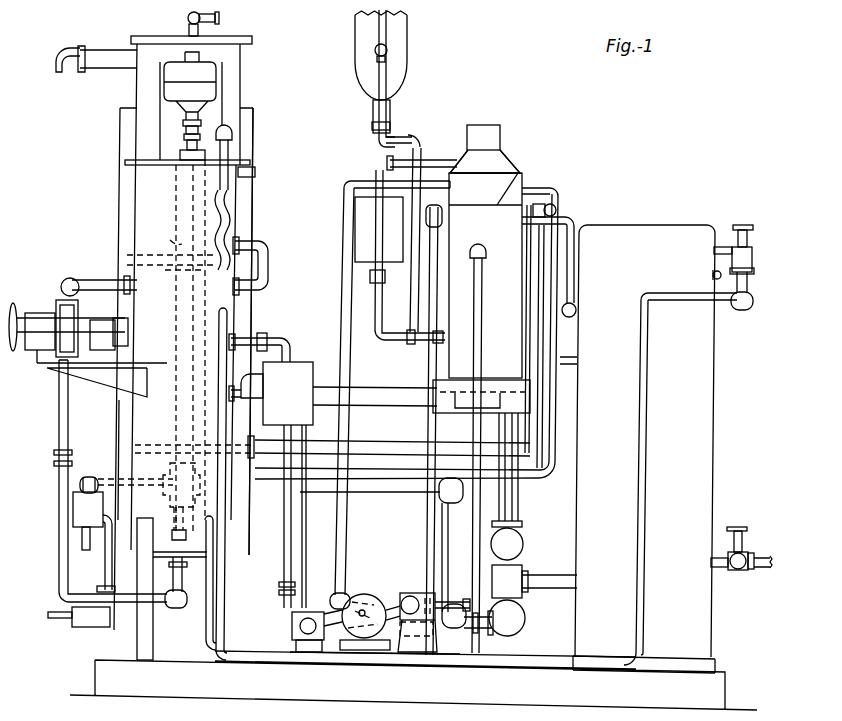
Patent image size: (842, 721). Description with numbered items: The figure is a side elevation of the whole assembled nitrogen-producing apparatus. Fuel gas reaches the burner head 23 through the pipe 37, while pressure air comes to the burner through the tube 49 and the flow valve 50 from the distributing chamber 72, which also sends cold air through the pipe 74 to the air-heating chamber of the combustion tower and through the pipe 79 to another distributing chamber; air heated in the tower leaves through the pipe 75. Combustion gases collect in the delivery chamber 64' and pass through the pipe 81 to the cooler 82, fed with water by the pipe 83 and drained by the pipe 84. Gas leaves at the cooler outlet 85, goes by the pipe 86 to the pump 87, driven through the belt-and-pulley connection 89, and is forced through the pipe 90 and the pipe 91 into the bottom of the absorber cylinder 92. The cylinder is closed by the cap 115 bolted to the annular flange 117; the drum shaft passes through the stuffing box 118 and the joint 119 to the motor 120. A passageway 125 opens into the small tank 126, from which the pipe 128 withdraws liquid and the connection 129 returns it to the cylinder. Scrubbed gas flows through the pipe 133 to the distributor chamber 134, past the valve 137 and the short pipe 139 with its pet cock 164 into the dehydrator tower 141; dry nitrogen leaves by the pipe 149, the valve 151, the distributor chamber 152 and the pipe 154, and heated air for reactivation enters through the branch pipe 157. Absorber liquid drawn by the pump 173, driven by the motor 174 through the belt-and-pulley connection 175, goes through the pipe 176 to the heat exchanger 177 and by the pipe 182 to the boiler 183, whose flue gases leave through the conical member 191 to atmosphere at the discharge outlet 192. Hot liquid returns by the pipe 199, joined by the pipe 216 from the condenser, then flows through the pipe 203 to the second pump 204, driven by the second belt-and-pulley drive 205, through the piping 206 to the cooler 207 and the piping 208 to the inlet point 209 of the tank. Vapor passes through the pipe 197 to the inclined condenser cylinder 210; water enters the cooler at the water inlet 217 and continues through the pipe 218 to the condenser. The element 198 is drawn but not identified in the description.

The burner head 23 is at (100, 628).
The pipe 37 is at (60, 619).
The tube 49 is at (95, 477).
The flow valve 50 is at (72, 506).
The delivery chamber 64' is at (266, 322).
The distributing chamber 72 is at (168, 480).
The pipe 74 is at (172, 242).
The pipe 75 is at (360, 400).
The pipe 79 is at (444, 530).
The pipe 81 is at (109, 50).
The cooler 82 is at (244, 70).
The pipe 83 is at (200, 405).
The pipe 84 is at (219, 18).
The cooler outlet 85 is at (268, 262).
The pipe 86 is at (97, 278).
The pump 87 is at (58, 312).
The belt-and-pulley connection 89 is at (16, 352).
The pipe 90 is at (58, 438).
The pipe 91 is at (180, 592).
The absorber cylinder 92 is at (135, 432).
The cap 115 is at (246, 163).
The annular flange 117 is at (255, 177).
The stuffing box 118 is at (186, 142).
The joint 119 is at (184, 124).
The motor 120 is at (212, 80).
The passageway 125 is at (264, 383).
The small tank 126 is at (302, 362).
The pipe 128 is at (286, 560).
The connection 129 is at (280, 333).
The pipe 133 is at (220, 176).
The distributor chamber 134 is at (754, 271).
The valve 137 is at (750, 241).
The short pipe 139 is at (722, 248).
The dehydrator tower 141 is at (648, 233).
The pipe 149 is at (722, 567).
The valve 151 is at (733, 545).
The distributor chamber 152 is at (752, 572).
The pipe 154 is at (755, 553).
The branch pipe 157 is at (533, 578).
The pet cock 164 is at (712, 276).
The pump 173 is at (306, 612).
The motor 174 is at (364, 640).
The belt-and-pulley connection 175 is at (330, 656).
The pipe 176 is at (428, 547).
The heat exchanger 177 is at (500, 215).
The pipe 182 is at (576, 260).
The boiler 183 is at (522, 303).
The conical member 191 is at (500, 165).
The discharge outlet 192 is at (500, 128).
The pipe 197 is at (372, 110).
The elbow 198 is at (437, 156).
The pipe 199 is at (403, 345).
The pipe 203 is at (482, 372).
The second pump 204 is at (412, 595).
The second belt-and-pulley drive 205 is at (385, 603).
The piping 206 is at (344, 288).
The cooler 207 is at (510, 185).
The piping 208 is at (560, 184).
The inlet point 209 is at (172, 530).
The condenser cylinder 210 is at (408, 52).
The pipe 216 is at (372, 232).
The water inlet 217 is at (528, 218).
The pipe 218 is at (378, 40).